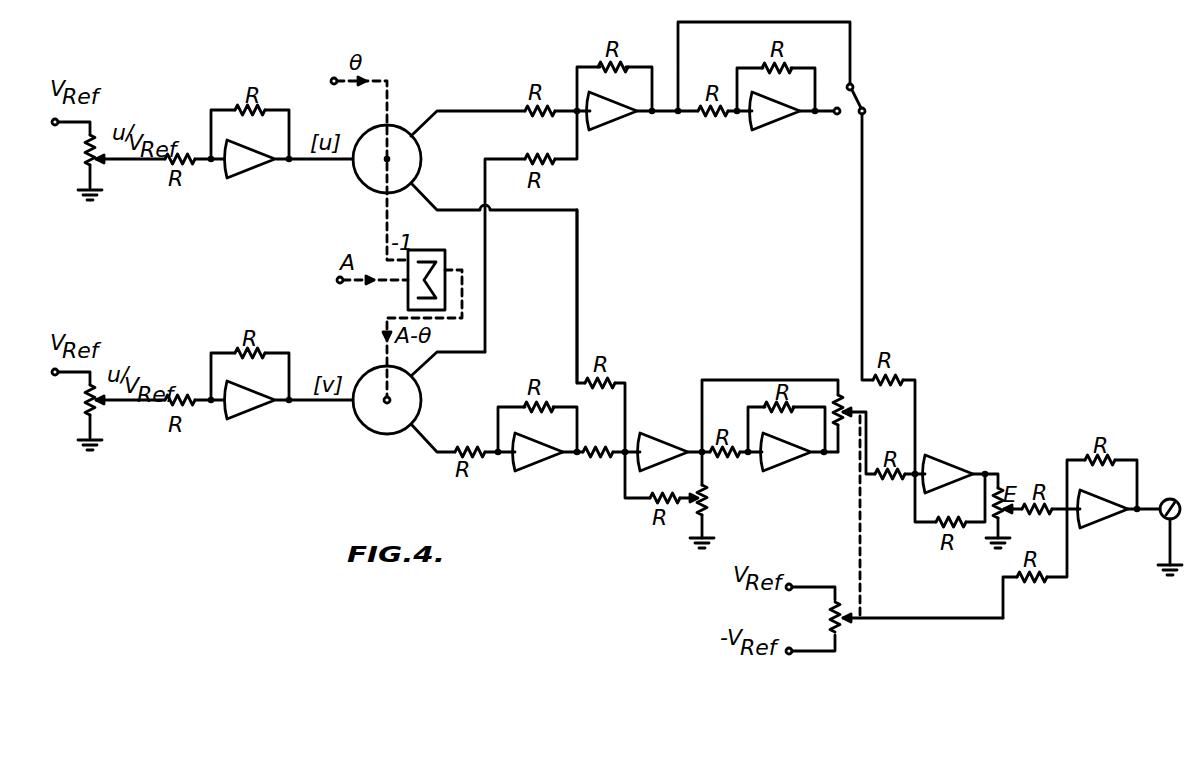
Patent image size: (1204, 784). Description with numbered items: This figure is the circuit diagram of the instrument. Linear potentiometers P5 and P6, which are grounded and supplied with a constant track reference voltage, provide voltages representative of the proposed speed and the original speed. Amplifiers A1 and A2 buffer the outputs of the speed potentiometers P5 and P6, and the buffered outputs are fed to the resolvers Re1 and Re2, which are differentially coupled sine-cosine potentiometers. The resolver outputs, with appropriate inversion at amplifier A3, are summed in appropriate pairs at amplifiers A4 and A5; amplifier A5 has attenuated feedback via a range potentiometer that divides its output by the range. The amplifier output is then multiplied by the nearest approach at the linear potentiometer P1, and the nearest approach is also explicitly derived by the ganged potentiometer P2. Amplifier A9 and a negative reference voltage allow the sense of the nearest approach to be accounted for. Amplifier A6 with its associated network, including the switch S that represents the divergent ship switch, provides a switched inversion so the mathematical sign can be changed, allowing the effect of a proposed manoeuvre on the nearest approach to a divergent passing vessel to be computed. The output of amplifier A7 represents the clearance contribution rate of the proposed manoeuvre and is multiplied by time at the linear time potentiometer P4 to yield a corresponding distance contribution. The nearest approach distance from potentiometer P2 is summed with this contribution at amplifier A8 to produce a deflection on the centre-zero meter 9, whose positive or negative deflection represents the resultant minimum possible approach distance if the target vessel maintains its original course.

The amplifier A1 is at (250, 400).
The amplifier A2 is at (250, 159).
The amplifier A3 is at (538, 452).
The amplifier A4 is at (612, 111).
The amplifier A5 is at (663, 452).
The amplifier A6 is at (775, 111).
The amplifier A7 is at (948, 474).
The amplifier A8 is at (1103, 509).
The amplifier A9 is at (786, 452).
The linear potentiometer P1 is at (850, 386).
The linear potentiometer P2 is at (844, 618).
The linear time potentiometer P4 is at (991, 505).
The linear potentiometer P5 is at (92, 411).
The linear potentiometer P6 is at (92, 161).
The resolver Re1 is at (397, 405).
The resolver Re2 is at (399, 152).
The switch S is at (864, 97).
The centre-zero meter 9 is at (1161, 514).